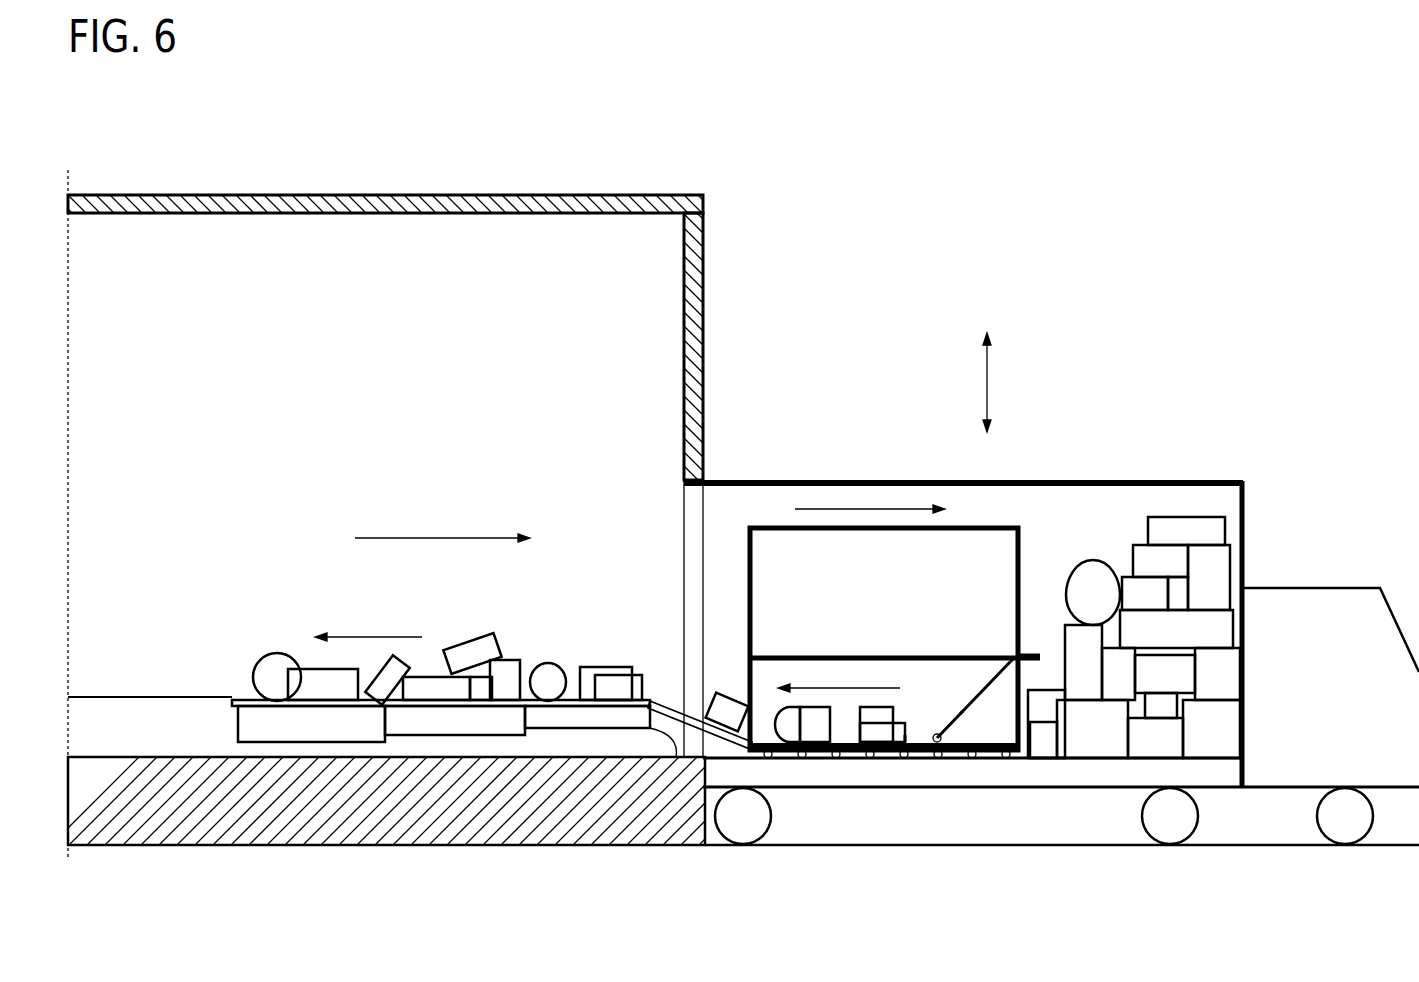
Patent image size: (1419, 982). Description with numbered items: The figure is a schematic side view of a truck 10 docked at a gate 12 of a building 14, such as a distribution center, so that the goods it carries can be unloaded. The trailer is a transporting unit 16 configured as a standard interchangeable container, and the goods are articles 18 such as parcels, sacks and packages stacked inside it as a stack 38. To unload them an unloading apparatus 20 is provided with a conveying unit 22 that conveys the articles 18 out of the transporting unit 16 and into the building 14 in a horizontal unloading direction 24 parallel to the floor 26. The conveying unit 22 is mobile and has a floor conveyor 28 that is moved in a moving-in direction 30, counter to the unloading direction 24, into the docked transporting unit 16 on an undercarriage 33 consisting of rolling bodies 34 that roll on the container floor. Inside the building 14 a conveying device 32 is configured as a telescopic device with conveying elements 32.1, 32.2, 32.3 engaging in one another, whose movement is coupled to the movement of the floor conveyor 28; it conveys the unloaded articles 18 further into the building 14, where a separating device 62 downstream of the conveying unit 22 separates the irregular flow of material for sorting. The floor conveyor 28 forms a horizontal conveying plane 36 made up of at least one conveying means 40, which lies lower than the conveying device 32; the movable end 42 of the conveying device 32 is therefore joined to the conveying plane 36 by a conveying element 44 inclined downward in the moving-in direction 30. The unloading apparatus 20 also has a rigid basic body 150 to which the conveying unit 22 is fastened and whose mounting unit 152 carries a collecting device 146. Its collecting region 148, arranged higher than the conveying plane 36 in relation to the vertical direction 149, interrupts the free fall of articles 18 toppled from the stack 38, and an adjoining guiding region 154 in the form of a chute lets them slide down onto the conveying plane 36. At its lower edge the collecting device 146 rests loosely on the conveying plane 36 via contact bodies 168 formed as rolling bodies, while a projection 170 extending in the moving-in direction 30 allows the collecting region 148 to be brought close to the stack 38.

The truck 10 is at (1051, 661).
The gate 12 is at (720, 474).
The building 14 is at (744, 256).
The transporting unit 16 is at (905, 481).
The articles 18 is at (746, 661).
The unloading apparatus 20 is at (915, 710).
The conveying unit 22 is at (782, 621).
The unloading direction 24 is at (380, 637).
The floor 26 is at (1218, 890).
The floor conveyor 28 is at (877, 890).
The moving-in direction 30 is at (445, 538).
The conveying device 32 is at (441, 809).
The conveying element 32.1 is at (322, 890).
The conveying element 32.2 is at (455, 890).
The conveying element 32.3 is at (585, 718).
The undercarriage 33 is at (1005, 890).
The rolling bodies 34 is at (965, 890).
The conveying plane 36 is at (918, 740).
The stack of articles 38 is at (1190, 530).
The conveying means 40 is at (825, 890).
The movable end 42 is at (668, 890).
The conveying element 44 is at (738, 890).
The separating device 62 is at (145, 705).
The collecting device 146 is at (958, 656).
The collecting region 148 is at (985, 656).
The vertical direction 149 is at (1040, 382).
The basic body 150 is at (1016, 552).
The mounting unit 152 is at (858, 656).
The guiding region 154 is at (955, 700).
The contact bodies 168 is at (922, 890).
The projection 170 is at (1035, 651).